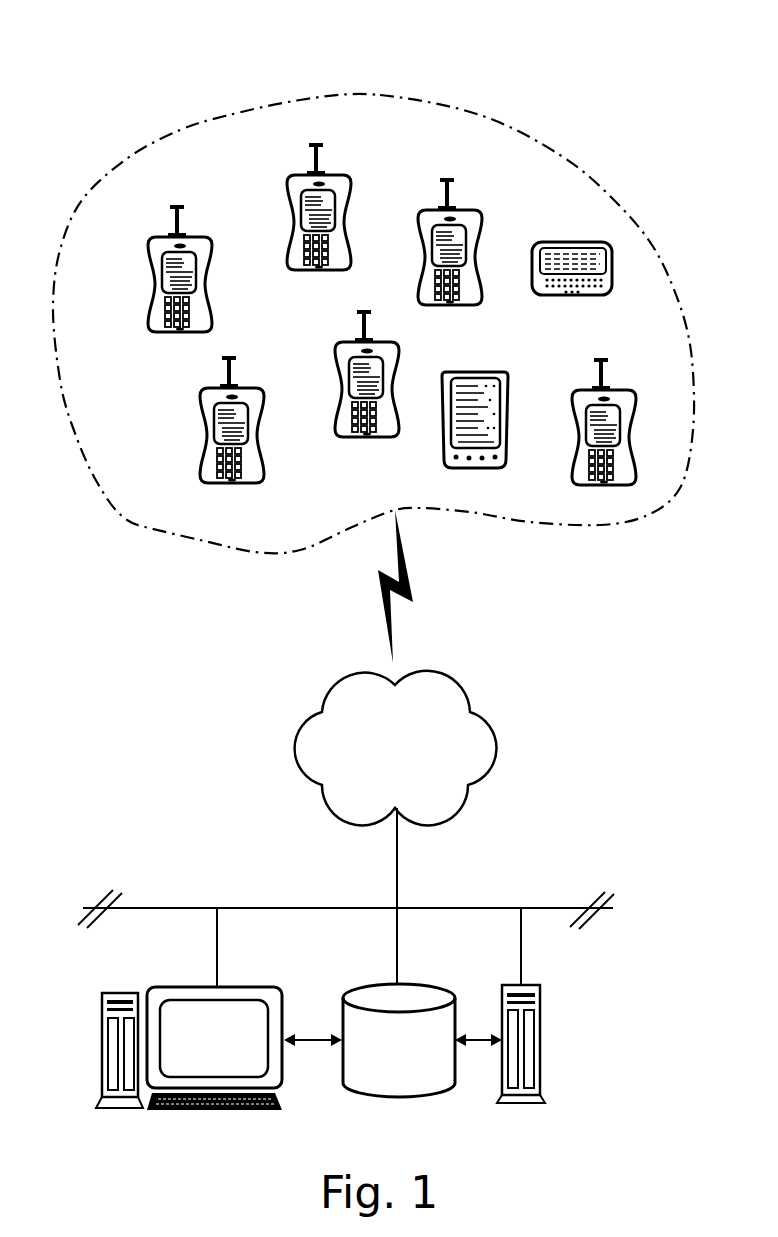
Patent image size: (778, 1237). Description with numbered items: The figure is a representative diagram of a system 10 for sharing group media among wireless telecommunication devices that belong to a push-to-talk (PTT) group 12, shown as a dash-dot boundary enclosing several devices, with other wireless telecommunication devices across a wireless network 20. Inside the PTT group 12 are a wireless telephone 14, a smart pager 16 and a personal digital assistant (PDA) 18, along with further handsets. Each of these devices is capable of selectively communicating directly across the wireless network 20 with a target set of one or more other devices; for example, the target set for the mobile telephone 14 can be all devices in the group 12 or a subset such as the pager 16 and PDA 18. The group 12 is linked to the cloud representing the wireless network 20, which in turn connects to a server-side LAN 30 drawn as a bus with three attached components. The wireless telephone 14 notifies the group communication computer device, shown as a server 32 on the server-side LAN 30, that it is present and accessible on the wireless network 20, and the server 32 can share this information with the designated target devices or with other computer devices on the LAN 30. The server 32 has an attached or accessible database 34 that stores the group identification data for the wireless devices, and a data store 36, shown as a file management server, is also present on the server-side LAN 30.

The system 10 is at (633, 110).
The PTT group 12 is at (112, 538).
The wireless telephone 14 is at (340, 178).
The smart pager 16 is at (576, 296).
The personal digital assistant (PDA) 18 is at (442, 437).
The wireless network 20 is at (497, 748).
The server-side LAN 30 is at (185, 908).
The group communication computer device 32 is at (190, 987).
The database 34 is at (345, 1068).
The data store 36 is at (540, 1080).